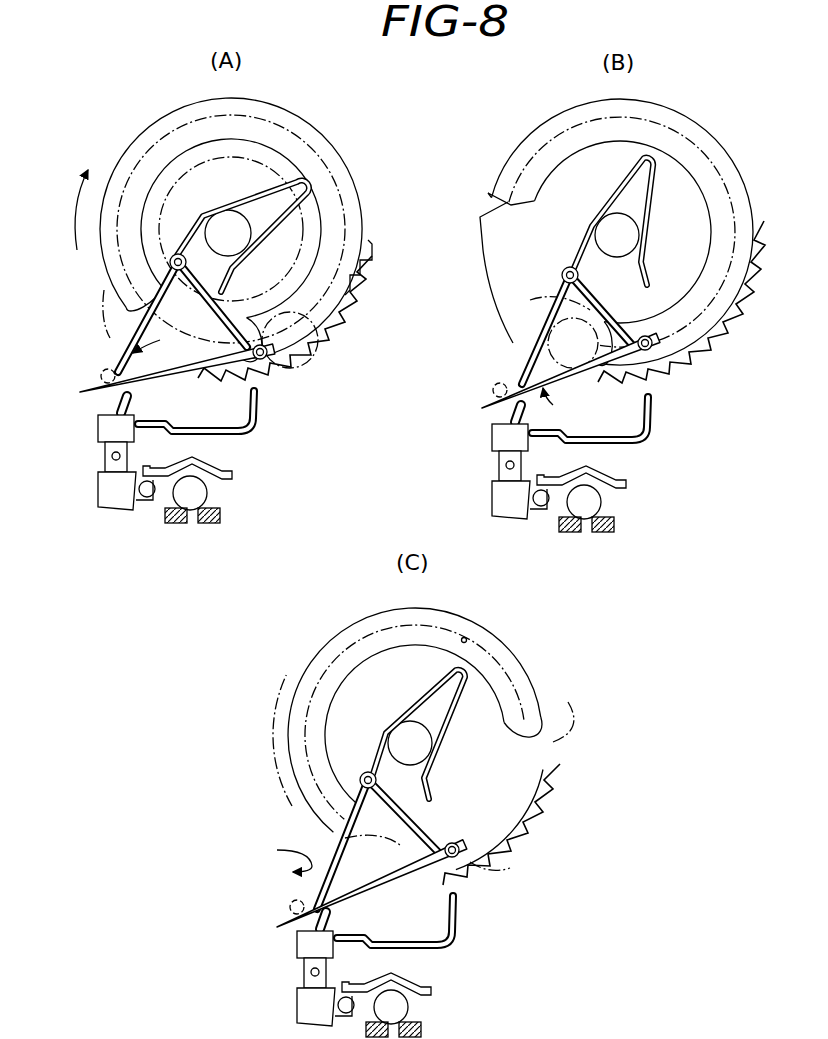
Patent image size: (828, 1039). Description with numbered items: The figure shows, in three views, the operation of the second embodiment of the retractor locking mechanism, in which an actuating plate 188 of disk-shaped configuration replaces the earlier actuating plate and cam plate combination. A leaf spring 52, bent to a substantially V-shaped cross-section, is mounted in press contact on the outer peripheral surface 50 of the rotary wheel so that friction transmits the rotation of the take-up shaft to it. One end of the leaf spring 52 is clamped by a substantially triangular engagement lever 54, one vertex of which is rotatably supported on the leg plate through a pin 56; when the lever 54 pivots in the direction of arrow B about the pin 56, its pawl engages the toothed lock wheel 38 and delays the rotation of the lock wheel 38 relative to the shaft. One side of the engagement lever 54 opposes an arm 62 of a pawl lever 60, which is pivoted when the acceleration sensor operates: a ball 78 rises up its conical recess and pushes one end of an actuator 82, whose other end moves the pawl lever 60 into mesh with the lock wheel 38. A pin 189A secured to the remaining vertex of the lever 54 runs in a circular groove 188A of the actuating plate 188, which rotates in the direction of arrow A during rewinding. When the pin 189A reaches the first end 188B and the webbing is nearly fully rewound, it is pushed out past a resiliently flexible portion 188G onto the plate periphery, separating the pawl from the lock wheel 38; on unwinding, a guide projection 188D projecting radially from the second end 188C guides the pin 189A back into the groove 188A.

The actuating plate 188 is at (312, 125).
The circular groove 188A is at (350, 248).
The first end of the groove 188B is at (118, 291).
The second end of the groove 188C is at (278, 405).
The guide projection 188D is at (300, 383).
The resiliently flexible portion 188G is at (107, 328).
The pin 189A is at (320, 332).
The lock wheel 38 is at (370, 282).
The outer peripheral surface 50 is at (237, 210).
The leaf spring 52 is at (285, 222).
The engagement lever 54 is at (158, 380).
The pin 56 is at (104, 392).
The pawl lever 60 is at (210, 428).
The arm 62 is at (98, 425).
The ball 78 is at (210, 493).
The actuator 82 is at (215, 467).
The arrow A is at (68, 170).
The arrow B is at (345, 598).